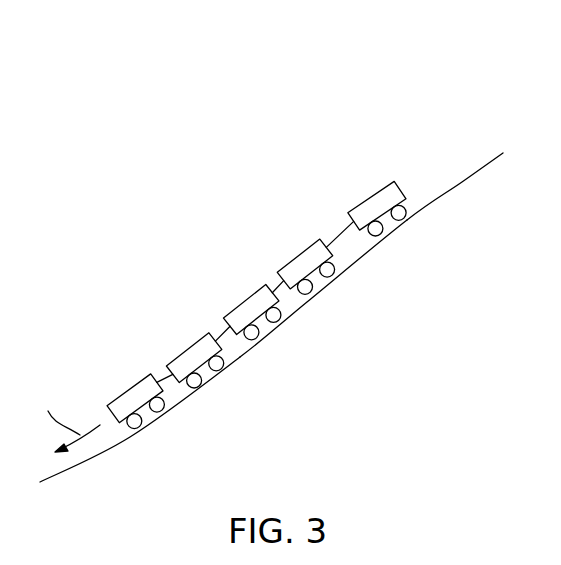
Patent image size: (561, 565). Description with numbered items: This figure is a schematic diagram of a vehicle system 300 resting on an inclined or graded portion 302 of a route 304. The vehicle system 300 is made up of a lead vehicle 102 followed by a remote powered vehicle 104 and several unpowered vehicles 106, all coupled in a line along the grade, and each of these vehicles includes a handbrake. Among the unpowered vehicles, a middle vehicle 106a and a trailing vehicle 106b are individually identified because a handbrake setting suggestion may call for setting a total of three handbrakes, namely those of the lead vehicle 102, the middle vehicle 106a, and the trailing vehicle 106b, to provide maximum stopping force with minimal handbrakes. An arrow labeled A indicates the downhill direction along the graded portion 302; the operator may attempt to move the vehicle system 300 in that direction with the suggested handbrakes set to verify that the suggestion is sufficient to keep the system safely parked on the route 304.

The vehicle system 300 is at (387, 100).
The graded portion 302 is at (271, 317).
The route 304 is at (297, 309).
The lead vehicle 102 is at (112, 392).
The remote powered vehicle 104 is at (180, 347).
The unpowered vehicle 106 is at (240, 298).
The middle vehicle 106a is at (253, 287).
The trailing vehicle 106b is at (370, 197).